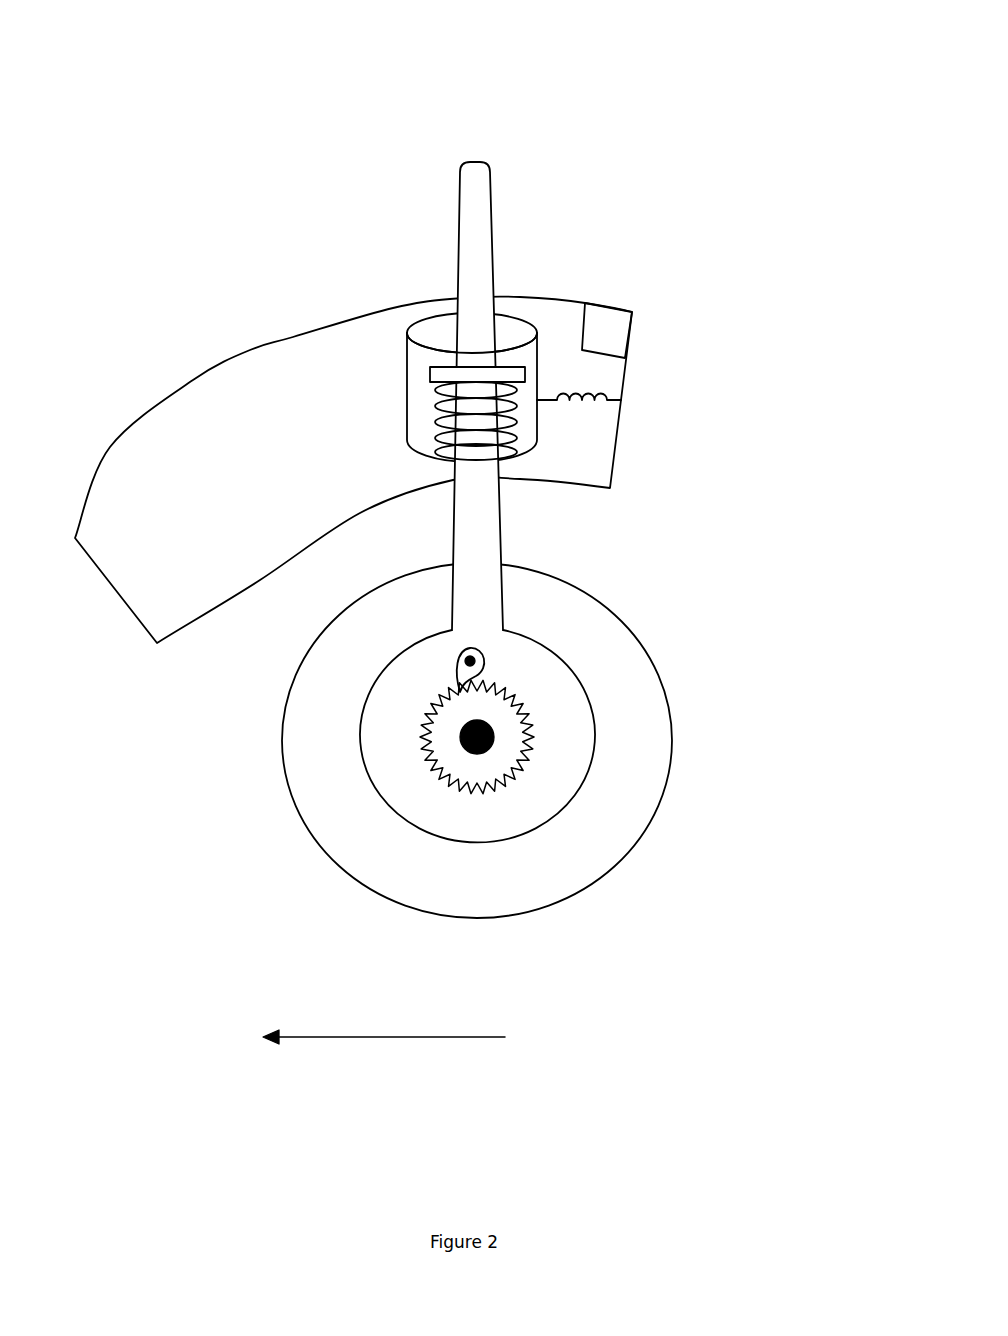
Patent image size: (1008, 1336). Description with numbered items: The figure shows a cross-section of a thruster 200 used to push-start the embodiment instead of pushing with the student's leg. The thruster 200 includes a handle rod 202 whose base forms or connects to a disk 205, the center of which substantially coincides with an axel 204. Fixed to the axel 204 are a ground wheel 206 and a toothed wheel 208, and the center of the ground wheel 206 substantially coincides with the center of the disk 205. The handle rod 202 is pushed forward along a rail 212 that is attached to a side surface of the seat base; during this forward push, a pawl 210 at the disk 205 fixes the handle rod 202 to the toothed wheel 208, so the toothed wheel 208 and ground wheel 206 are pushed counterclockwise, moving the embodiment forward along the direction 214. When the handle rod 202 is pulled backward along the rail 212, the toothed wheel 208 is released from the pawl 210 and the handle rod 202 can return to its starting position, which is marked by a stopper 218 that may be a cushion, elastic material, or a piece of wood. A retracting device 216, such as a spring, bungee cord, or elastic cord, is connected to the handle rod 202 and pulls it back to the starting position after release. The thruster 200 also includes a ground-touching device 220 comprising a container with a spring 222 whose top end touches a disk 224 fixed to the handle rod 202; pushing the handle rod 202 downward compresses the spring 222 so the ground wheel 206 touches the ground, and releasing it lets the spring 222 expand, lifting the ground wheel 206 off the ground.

The thruster 200 is at (780, 70).
The handle rod 202 is at (480, 203).
The axel 204 is at (492, 727).
The disk 205 is at (363, 702).
The ground wheel 206 is at (333, 830).
The toothed wheel 208 is at (505, 752).
The pawl 210 is at (485, 655).
The rail 212 is at (228, 328).
The direction 214 is at (384, 1029).
The retracting device 216 is at (587, 412).
The stopper 218 is at (613, 327).
The ground-touching device 220 is at (407, 350).
The spring 222 is at (437, 415).
The disk 224 is at (423, 375).